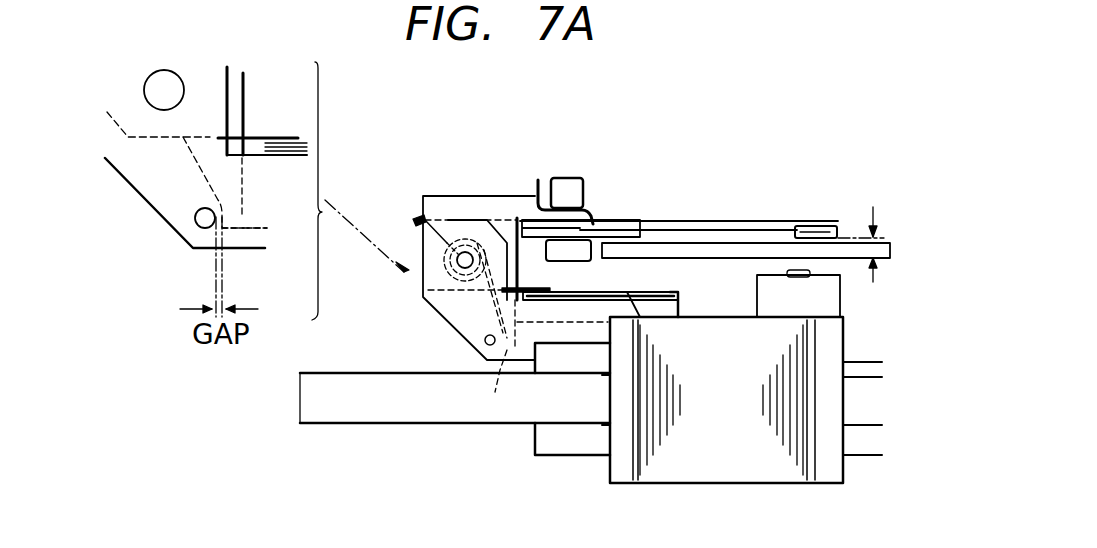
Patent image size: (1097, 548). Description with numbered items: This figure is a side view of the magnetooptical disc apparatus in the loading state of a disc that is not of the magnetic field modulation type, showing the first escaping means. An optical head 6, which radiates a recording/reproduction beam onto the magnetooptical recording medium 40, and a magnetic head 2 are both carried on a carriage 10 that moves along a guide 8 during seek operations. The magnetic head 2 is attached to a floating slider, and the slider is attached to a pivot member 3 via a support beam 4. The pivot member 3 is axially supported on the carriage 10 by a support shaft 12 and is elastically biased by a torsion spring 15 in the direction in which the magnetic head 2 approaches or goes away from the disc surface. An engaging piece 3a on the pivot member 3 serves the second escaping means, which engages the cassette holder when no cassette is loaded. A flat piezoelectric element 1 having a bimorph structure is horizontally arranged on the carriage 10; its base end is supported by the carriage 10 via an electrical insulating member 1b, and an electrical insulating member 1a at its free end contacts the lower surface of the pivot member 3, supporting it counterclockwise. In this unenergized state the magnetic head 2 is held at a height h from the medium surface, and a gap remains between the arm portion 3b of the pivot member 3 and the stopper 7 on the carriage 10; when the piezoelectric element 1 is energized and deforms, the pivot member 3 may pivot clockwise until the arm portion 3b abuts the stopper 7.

The piezoelectric element 1 is at (627, 291).
The electrical insulating member 1a is at (524, 289).
The electrical insulating member 1b is at (678, 290).
The magnetic head 2 is at (820, 227).
The pivot member 3 is at (462, 206).
The engaging piece 3a is at (568, 188).
The arm portion 3b is at (365, 319).
The support beam 4 is at (728, 221).
The optical head 6 is at (832, 305).
The stopper 7 is at (194, 218).
The guide 8 is at (395, 413).
The carriage 10 is at (572, 447).
The support shaft 12 is at (170, 78).
The torsion spring 15 is at (420, 218).
The magnetooptical recording medium 40 is at (853, 252).